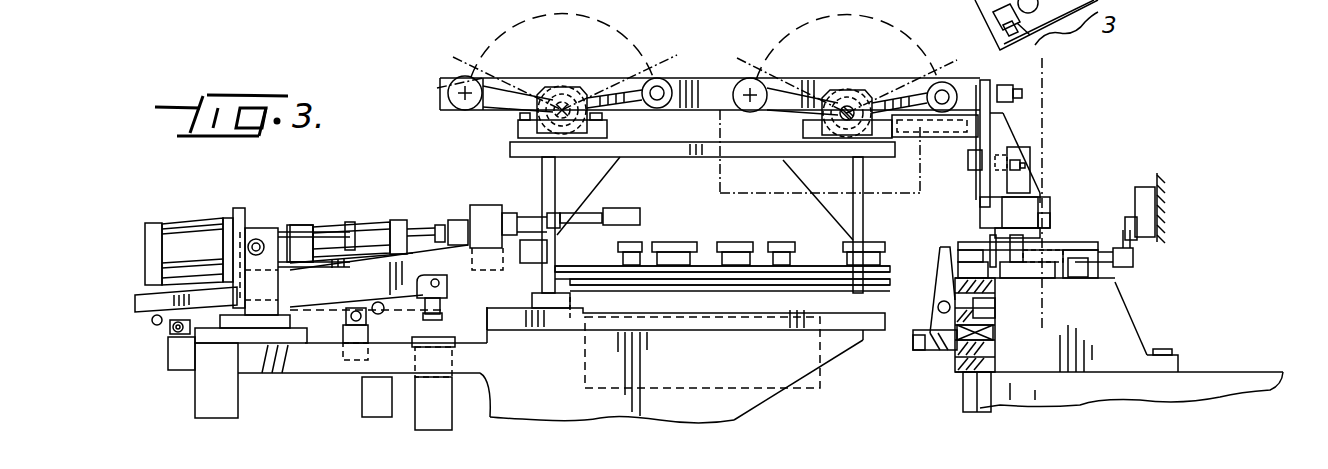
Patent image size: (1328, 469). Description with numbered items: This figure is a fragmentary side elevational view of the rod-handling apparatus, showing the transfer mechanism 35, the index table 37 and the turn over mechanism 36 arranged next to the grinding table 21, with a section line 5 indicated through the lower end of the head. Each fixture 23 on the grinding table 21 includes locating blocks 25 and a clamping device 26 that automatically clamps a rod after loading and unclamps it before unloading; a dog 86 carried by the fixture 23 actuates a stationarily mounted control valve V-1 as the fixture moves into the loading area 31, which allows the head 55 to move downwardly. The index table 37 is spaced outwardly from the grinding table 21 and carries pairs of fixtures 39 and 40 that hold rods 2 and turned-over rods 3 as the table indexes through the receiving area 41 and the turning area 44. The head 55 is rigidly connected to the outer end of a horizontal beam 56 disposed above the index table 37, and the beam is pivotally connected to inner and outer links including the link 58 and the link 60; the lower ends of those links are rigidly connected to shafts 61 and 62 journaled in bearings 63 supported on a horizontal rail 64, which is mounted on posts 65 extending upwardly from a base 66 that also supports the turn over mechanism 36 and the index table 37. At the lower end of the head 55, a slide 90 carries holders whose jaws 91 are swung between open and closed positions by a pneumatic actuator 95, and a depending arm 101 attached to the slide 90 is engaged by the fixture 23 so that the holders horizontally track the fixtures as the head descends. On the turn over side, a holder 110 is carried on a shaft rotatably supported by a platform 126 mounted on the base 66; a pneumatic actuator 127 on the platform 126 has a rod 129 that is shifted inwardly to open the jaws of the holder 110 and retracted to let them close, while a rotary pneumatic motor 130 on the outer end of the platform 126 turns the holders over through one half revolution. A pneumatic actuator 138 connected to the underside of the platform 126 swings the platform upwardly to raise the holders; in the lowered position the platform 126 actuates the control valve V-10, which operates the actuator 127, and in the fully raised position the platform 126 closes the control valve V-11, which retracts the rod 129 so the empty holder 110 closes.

The rod 2 is at (627, 242).
The rod 3 is at (642, 210).
The section line 5- 5 is at (1005, 67).
The grinding table 21 is at (1226, 360).
The fixture 23 is at (1088, 232).
The locating blocks 25 is at (960, 268).
The clamping device 26 is at (935, 290).
The loading area 31 is at (1130, 177).
The transfer mechanism 35 is at (1022, 127).
The turn over mechanism 36 is at (478, 203).
The index table 37 is at (719, 289).
The fixture 39 is at (674, 264).
The fixture 40 is at (533, 264).
The receiving area 41 is at (817, 229).
The turning area 44 is at (627, 195).
The head 55 is at (983, 178).
The horizontal beam 56 is at (715, 78).
The inner link 58 is at (908, 85).
The outer link 60 is at (704, 47).
The shaft 61 is at (847, 110).
The shaft 62 is at (560, 100).
The bearings 63 is at (520, 127).
The horizontal rail 64 is at (703, 142).
The posts 65 is at (548, 172).
The base 66 is at (573, 330).
The dog 86 is at (1133, 255).
The slide 90 is at (1047, 200).
The jaws 91 is at (1023, 258).
The pneumatic actuator 95 is at (1020, 167).
The depending arm 101 is at (990, 237).
The first holder 110 is at (597, 210).
The platform 126 is at (137, 295).
The pneumatic actuator 127 is at (365, 228).
The rod 129 is at (425, 225).
The rotary pneumatic motor 130 is at (183, 222).
The pneumatic actuator 138 is at (415, 407).
The control valve V-1 is at (1150, 212).
The control valve V-10 is at (335, 322).
The control valve V-11 is at (168, 355).